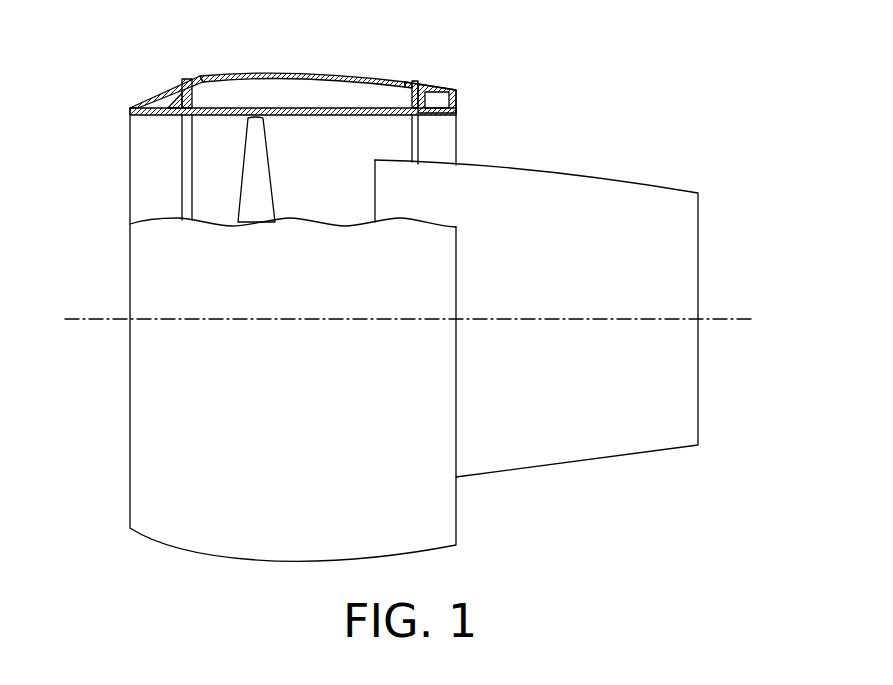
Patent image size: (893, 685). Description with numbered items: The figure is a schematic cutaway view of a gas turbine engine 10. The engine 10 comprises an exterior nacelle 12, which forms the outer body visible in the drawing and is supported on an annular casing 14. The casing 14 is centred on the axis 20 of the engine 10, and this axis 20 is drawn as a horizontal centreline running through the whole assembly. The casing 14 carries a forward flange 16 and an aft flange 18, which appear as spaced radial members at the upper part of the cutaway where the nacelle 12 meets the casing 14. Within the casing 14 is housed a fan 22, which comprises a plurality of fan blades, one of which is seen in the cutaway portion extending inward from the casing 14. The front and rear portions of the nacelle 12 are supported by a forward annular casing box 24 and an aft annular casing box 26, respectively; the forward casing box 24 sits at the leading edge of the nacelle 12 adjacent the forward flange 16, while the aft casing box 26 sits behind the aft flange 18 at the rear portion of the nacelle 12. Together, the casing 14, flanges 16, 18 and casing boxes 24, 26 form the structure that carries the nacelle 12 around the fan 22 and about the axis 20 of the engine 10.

The gas turbine engine 10 is at (547, 74).
The exterior nacelle 12 is at (452, 521).
The annular casing 14 is at (346, 118).
The forward flange 16 is at (199, 84).
The aft flange 18 is at (410, 86).
The axis 20 is at (85, 323).
The fan 22 is at (265, 186).
The forward annular casing box 24 is at (162, 94).
The aft annular casing box 26 is at (434, 91).